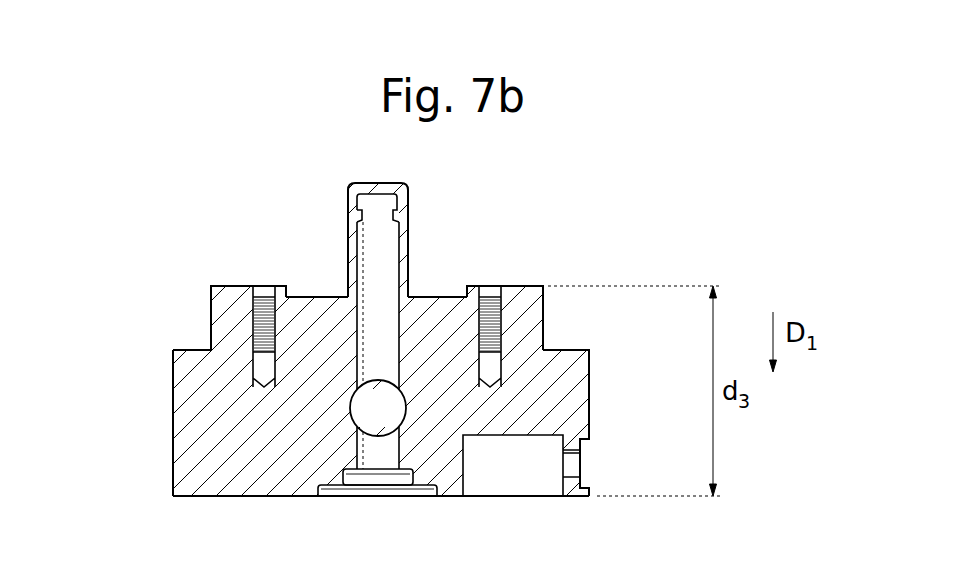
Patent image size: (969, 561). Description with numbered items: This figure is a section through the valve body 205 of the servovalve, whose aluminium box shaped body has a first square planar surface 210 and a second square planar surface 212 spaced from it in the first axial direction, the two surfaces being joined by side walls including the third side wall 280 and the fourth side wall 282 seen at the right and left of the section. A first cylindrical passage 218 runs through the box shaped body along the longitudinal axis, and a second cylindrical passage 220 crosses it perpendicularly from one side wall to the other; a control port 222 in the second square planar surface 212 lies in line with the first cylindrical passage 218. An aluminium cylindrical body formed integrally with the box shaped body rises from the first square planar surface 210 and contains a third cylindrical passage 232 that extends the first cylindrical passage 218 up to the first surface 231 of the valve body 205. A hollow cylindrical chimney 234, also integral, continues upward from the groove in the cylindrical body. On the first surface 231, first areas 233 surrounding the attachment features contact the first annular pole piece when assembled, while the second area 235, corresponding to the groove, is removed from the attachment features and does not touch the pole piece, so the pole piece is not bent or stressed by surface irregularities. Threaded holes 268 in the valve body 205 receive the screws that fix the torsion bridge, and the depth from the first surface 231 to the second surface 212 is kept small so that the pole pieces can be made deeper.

The valve body 205 is at (634, 374).
The first square planar surface 210 is at (173, 350).
The second square planar surface 212 is at (198, 497).
The first cylindrical passage 218 is at (373, 462).
The second cylindrical passage 220 is at (387, 423).
The control port 222 is at (418, 497).
The first surface 231 is at (225, 285).
The third cylindrical passage 232 is at (380, 260).
The first areas 233 is at (282, 286).
The hollow cylindrical chimney 234 is at (409, 195).
The second area 235 is at (323, 297).
The threaded holes 268 is at (262, 318).
The third side wall 280 is at (589, 403).
The fourth side wall 282 is at (173, 425).